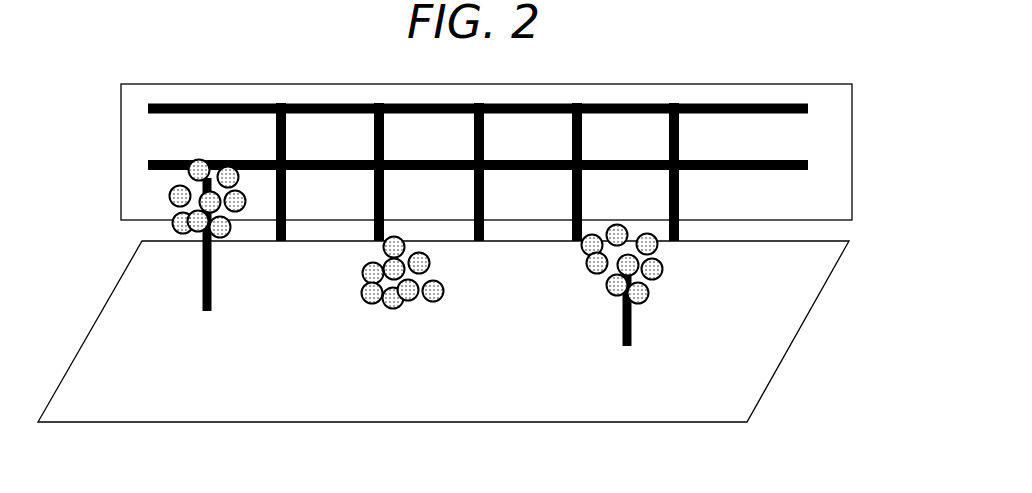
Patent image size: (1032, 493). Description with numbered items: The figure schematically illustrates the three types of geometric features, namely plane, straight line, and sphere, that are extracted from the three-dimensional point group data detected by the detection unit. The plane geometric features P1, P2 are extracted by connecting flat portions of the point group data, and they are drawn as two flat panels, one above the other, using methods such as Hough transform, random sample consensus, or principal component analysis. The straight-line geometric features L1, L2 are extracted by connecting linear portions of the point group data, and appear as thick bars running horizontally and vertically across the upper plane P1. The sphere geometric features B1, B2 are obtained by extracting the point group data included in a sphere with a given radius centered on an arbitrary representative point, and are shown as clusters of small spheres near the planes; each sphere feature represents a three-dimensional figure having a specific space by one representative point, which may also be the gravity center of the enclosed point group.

The geometric feature of straight line L1 is at (793, 158).
The geometric feature of straight line L2 is at (668, 137).
The geometric feature of plane P1 is at (835, 184).
The geometric feature of plane P2 is at (783, 326).
The geometric feature of sphere B1 is at (167, 200).
The geometric feature of sphere B2 is at (408, 295).